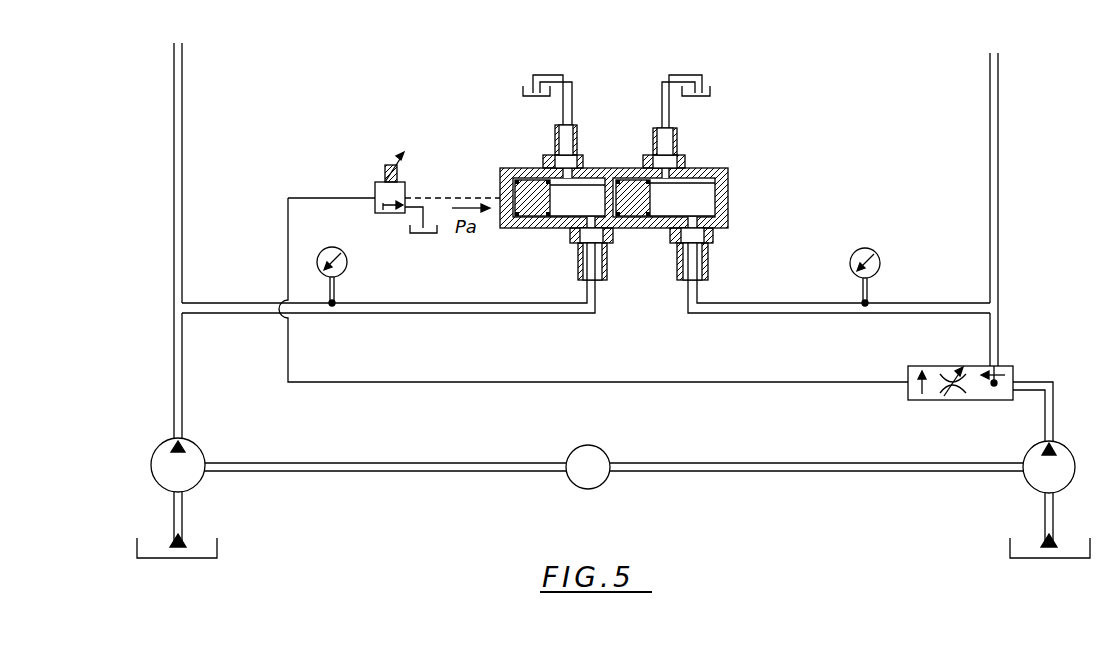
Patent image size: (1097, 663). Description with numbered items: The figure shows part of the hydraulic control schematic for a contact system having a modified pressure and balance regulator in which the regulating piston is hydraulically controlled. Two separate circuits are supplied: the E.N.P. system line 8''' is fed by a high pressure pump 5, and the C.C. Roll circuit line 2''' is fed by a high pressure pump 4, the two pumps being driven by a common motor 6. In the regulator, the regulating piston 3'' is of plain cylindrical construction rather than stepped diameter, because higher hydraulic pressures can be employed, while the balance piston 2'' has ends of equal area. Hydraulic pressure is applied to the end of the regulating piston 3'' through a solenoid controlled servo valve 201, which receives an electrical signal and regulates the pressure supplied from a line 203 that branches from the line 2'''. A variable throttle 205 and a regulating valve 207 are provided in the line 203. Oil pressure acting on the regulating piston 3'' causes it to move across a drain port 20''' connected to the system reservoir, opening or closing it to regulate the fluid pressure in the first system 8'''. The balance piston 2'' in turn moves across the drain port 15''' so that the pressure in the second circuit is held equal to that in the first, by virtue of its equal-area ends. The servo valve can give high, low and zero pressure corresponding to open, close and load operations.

The E.N.P. circuit system line 8''' is at (200, 240).
The C.C. Roll circuit line 2''' is at (1017, 209).
The solenoid controlled valve 201 is at (398, 190).
The line 203 is at (770, 383).
The variable throttle 205 is at (948, 400).
The regulating valve 207 is at (915, 398).
The drain port 20''' is at (570, 112).
The drain port 15''' is at (692, 110).
The regulating piston 3'' is at (573, 174).
The balance piston 2'' is at (685, 175).
The high pressure pump 5 is at (190, 458).
The common motor 6 is at (604, 460).
The high pressure pump 4 is at (1062, 460).